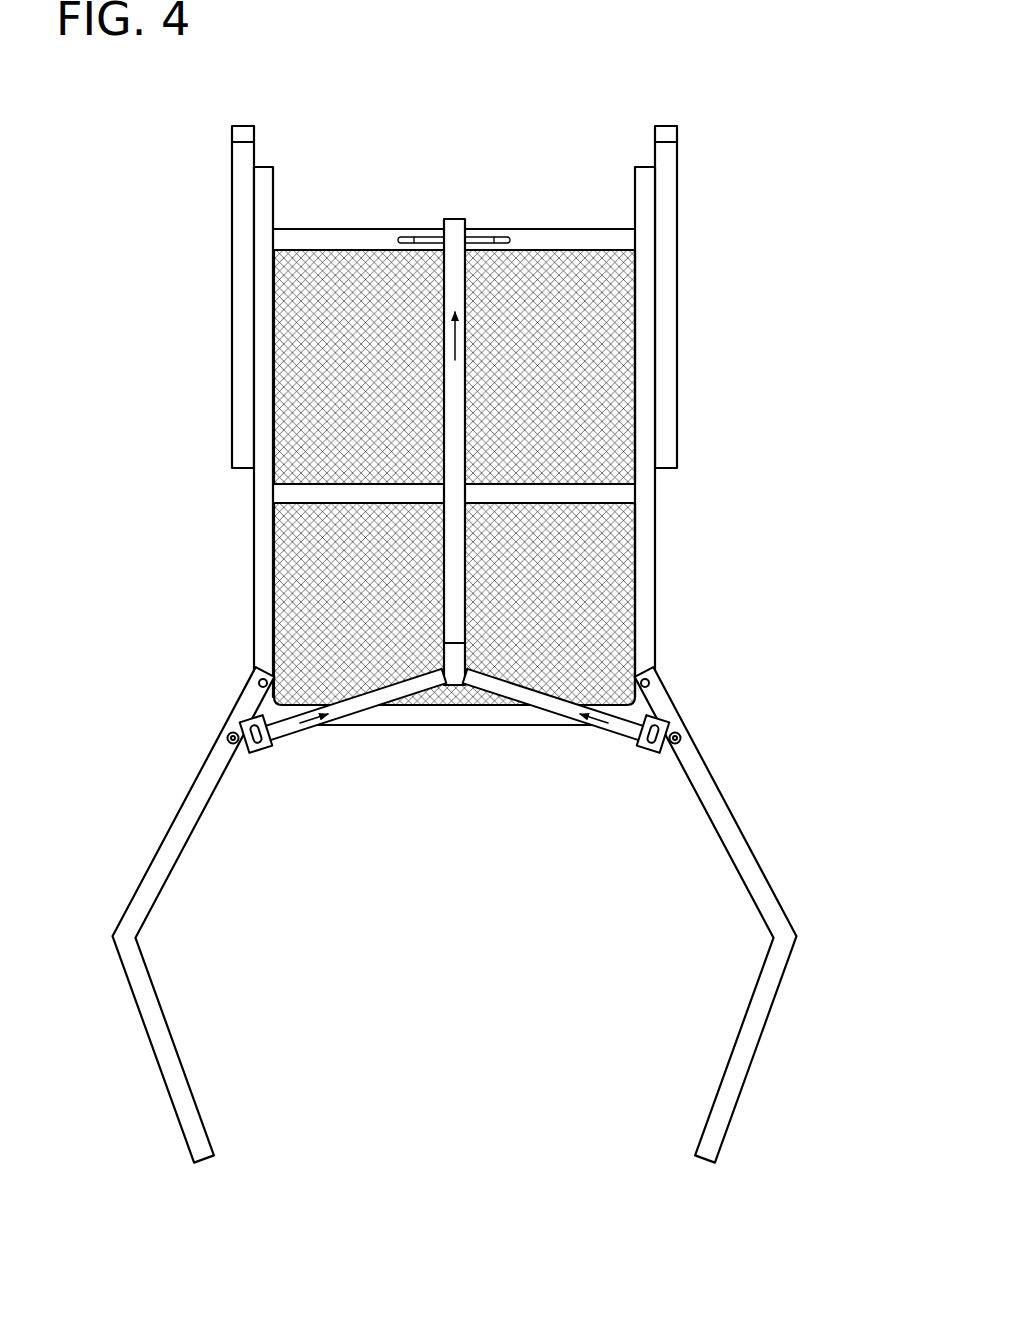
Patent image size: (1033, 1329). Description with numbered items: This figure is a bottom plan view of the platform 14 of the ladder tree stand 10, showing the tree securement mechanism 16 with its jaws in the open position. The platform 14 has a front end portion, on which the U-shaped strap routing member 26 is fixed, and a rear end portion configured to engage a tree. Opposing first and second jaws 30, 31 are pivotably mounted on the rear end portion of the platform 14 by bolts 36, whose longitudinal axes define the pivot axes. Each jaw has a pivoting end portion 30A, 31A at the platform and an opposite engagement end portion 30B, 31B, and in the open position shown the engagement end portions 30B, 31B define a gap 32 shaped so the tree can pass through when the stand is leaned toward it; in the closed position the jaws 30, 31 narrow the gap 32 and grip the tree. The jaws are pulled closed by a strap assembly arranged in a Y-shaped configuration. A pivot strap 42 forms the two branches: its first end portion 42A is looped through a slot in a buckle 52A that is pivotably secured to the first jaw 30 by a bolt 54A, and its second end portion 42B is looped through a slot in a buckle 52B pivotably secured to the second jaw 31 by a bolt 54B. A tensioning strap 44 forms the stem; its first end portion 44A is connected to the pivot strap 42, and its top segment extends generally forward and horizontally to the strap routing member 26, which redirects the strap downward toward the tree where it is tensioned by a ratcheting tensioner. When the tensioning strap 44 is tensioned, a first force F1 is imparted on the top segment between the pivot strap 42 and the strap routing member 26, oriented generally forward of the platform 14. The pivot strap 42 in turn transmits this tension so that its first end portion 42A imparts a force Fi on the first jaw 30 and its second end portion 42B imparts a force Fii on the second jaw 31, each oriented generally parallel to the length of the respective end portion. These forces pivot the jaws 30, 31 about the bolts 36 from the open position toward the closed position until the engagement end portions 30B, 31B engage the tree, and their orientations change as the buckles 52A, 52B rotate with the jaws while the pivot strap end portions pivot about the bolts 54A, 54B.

The ladder tree stand 10 is at (80, 1115).
The platform 14 is at (657, 535).
The securement mechanism 16 is at (457, 915).
The strap routing member 26 is at (485, 241).
The first jaw 30 is at (759, 921).
The pivoting end portion of first jaw 30A is at (656, 702).
The engagement end portion of first jaw 30B is at (708, 1147).
The second jaw 31 is at (170, 909).
The pivoting end portion of second jaw 31A is at (253, 700).
The engagement end portion of second jaw 31B is at (200, 1143).
The gap 32 is at (480, 1103).
The bolts 36 is at (258, 675).
The pivot strap 42 is at (506, 755).
The first end portion of pivot strap 42A is at (623, 737).
The second end portion of pivot strap 42B is at (338, 755).
The tensioning strap 44 is at (340, 517).
The first end portion of tensioning strap 44A is at (456, 672).
The first buckle 52A is at (680, 738).
The second buckle 52B is at (275, 743).
The first buckle bolt 54A is at (667, 745).
The second buckle bolt 54B is at (228, 738).
The first force F1 is at (455, 350).
The force on first jaw Fi is at (610, 720).
The force on second jaw Fii is at (297, 720).